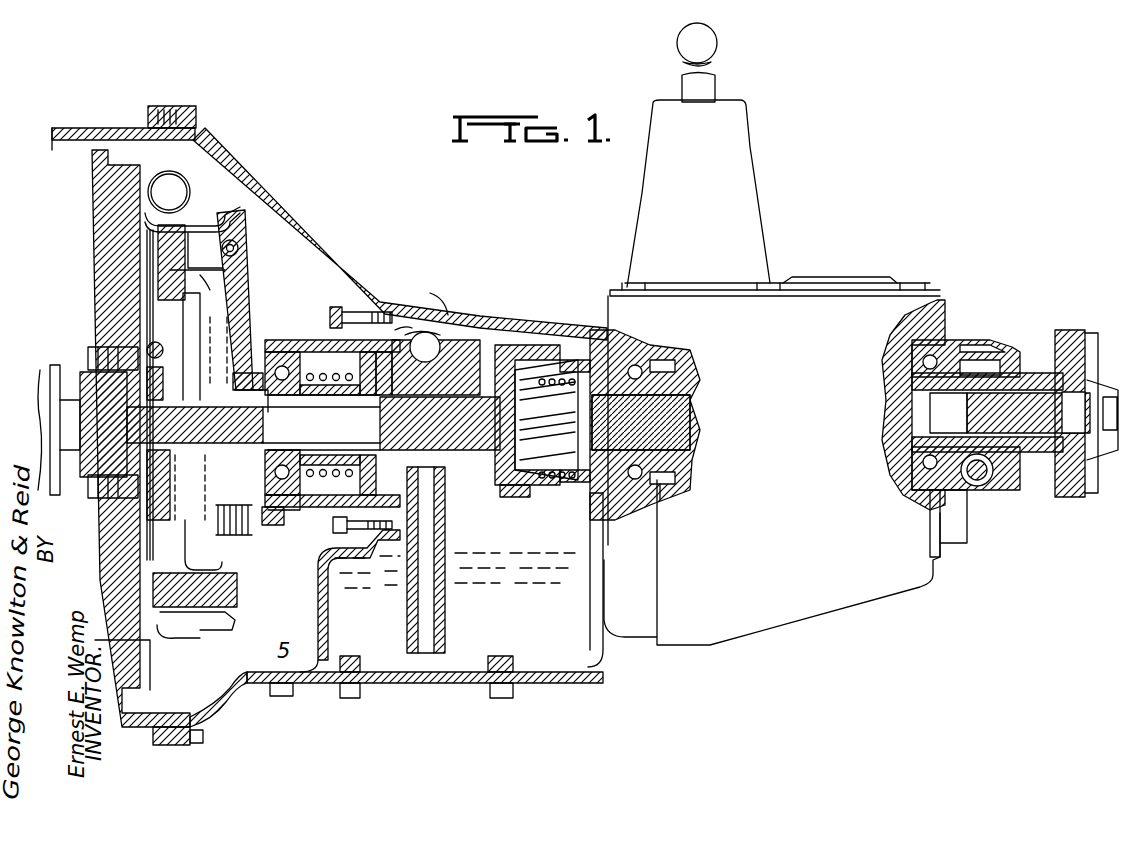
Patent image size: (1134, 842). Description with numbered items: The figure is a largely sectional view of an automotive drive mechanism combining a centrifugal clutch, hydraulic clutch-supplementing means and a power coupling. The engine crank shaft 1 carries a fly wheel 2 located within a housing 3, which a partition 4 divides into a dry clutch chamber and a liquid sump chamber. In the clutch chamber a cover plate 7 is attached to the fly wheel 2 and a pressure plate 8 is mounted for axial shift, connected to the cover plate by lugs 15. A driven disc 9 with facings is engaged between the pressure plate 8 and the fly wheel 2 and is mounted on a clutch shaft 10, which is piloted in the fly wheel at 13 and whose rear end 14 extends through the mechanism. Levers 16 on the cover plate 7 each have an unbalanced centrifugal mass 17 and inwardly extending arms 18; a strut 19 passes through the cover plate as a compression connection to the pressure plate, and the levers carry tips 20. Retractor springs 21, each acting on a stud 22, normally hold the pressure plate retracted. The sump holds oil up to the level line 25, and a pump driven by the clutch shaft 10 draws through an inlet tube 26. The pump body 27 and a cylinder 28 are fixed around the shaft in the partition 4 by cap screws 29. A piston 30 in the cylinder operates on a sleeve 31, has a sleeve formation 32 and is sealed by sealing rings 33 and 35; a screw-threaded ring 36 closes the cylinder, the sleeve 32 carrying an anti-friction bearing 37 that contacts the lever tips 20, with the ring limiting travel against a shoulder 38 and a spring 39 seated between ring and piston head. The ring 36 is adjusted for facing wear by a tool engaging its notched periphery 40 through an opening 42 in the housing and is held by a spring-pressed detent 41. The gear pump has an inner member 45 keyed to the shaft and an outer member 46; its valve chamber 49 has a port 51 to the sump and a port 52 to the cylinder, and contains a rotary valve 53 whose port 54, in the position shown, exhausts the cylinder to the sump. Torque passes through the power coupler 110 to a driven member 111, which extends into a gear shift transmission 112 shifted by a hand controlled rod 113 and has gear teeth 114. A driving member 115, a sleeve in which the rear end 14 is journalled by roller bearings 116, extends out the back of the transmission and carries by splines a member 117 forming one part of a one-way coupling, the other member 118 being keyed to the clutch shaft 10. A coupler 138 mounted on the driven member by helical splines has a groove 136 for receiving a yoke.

The crank shaft 1 is at (62, 380).
The fly wheel 2 is at (105, 245).
The housing 3 is at (287, 222).
The partition 4 is at (325, 589).
The cover plate 7 is at (212, 630).
The pressure plate 8 is at (178, 640).
The driven disc 9 is at (110, 540).
The clutch shaft 10 is at (253, 425).
The pilot of clutch shaft 13 is at (92, 405).
The rear end of clutch shaft 14 is at (1100, 432).
The lugs 15 is at (228, 607).
The levers 16 is at (236, 208).
The unbalanced centrifugal mass 17 is at (172, 188).
The inwardly extending arms 18 is at (250, 320).
The strut 19 is at (192, 316).
The lever tips 20 is at (252, 342).
The retractor springs 21 is at (240, 540).
The stud 22 is at (252, 530).
The liquid level line 25 is at (530, 556).
The inlet tube 26 is at (445, 602).
The pump body 27 is at (412, 328).
The cylinder 28 is at (290, 342).
The cap screws 29 is at (340, 308).
The piston 30 is at (352, 475).
The sleeve 31 is at (270, 459).
The sleeve formation 32 is at (198, 392).
The sealing ring 33 is at (354, 369).
The sealing ring 35 is at (298, 398).
The ring 36 is at (268, 491).
The anti-friction bearing 37 is at (268, 477).
The shoulder 38 is at (330, 474).
The spring 39 is at (330, 369).
The notched periphery 40 is at (273, 523).
The spring-pressed detent 41 is at (345, 531).
The opening 42 is at (298, 678).
The inner pump member 45 is at (440, 423).
The outer pump member 46 is at (518, 497).
The valve chamber 49 is at (440, 340).
The port 51 is at (428, 330).
The port 52 is at (391, 369).
The rotary valve 53 is at (455, 355).
The valve port 54 is at (432, 293).
The power coupler 110 is at (524, 342).
The driven member 111 is at (646, 492).
The gear shift transmission 112 is at (841, 597).
The hand controlled rod 113 is at (705, 90).
The gear teeth 114 is at (662, 486).
The driving member 115 is at (933, 420).
The roller bearings 116 is at (983, 345).
The coupling member 117 is at (1050, 470).
The coupling member 118 is at (1090, 377).
The groove 136 is at (574, 484).
The coupler 138 is at (548, 490).